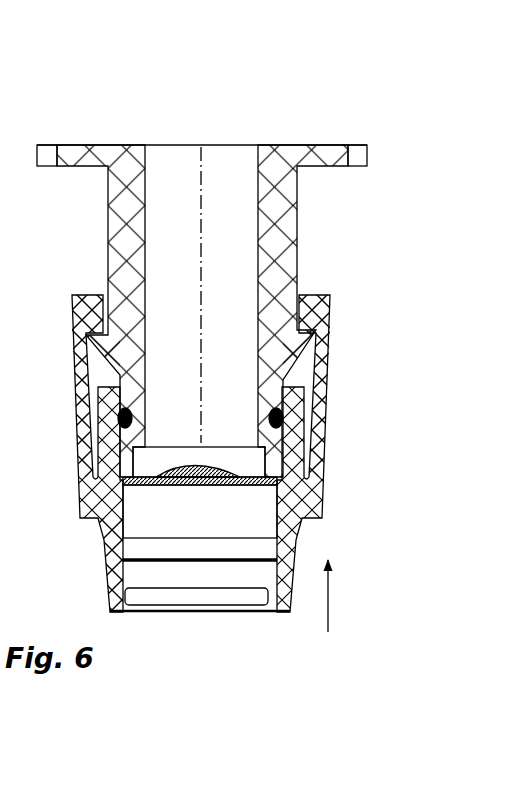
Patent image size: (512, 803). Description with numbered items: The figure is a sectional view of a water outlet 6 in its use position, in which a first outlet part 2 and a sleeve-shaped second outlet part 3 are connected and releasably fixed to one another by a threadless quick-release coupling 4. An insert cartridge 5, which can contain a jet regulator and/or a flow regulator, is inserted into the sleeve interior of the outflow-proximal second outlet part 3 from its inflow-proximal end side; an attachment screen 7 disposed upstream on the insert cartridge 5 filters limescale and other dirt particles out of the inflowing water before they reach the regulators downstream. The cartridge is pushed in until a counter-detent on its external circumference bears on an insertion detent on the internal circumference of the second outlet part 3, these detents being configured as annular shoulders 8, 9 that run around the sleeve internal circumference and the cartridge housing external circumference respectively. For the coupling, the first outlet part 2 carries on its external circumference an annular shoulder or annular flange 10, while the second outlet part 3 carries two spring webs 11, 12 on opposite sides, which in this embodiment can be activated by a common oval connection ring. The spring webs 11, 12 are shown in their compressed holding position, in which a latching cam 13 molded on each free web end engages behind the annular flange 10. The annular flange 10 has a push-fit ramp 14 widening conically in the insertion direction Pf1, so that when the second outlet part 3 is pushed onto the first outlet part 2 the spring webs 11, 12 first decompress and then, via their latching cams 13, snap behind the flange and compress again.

The first outlet part 2 is at (279, 246).
The second outlet part 3 is at (322, 419).
The quick-release coupling 4 is at (354, 302).
The insert cartridge 5 is at (242, 523).
The water outlet 6 is at (415, 192).
The attachment screen 7 is at (215, 466).
The annular shoulder 8 is at (124, 556).
The annular shoulder 9 is at (233, 565).
The annular flange 10 is at (304, 348).
The spring web 11 is at (321, 447).
The spring web 12 is at (79, 388).
The latching cam 13 is at (90, 296).
The push-fit ramp 14 is at (90, 376).
The insertion direction Pf1 is at (330, 593).